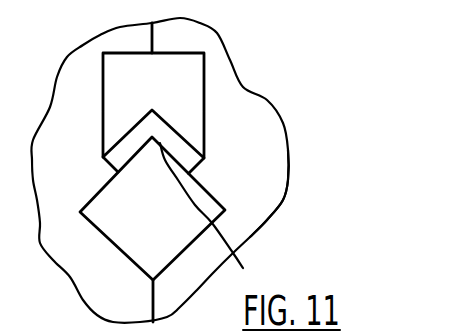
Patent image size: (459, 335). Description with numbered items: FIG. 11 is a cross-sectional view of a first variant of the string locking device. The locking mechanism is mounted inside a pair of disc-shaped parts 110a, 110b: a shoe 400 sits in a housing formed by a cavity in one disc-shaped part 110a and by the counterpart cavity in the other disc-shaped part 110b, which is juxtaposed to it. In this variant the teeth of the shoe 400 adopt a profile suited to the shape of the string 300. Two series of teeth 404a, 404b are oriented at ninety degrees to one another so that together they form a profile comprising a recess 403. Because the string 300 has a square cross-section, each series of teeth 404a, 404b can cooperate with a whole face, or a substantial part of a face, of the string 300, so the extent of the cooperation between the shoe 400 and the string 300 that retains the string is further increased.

The disc-shaped part 110a is at (116, 296).
The disc-shaped part 110b is at (253, 210).
The string 300 is at (173, 222).
The shoe 400 is at (172, 95).
The recess 403 is at (221, 213).
The first series of teeth 404a is at (114, 161).
The second series of teeth 404b is at (187, 141).